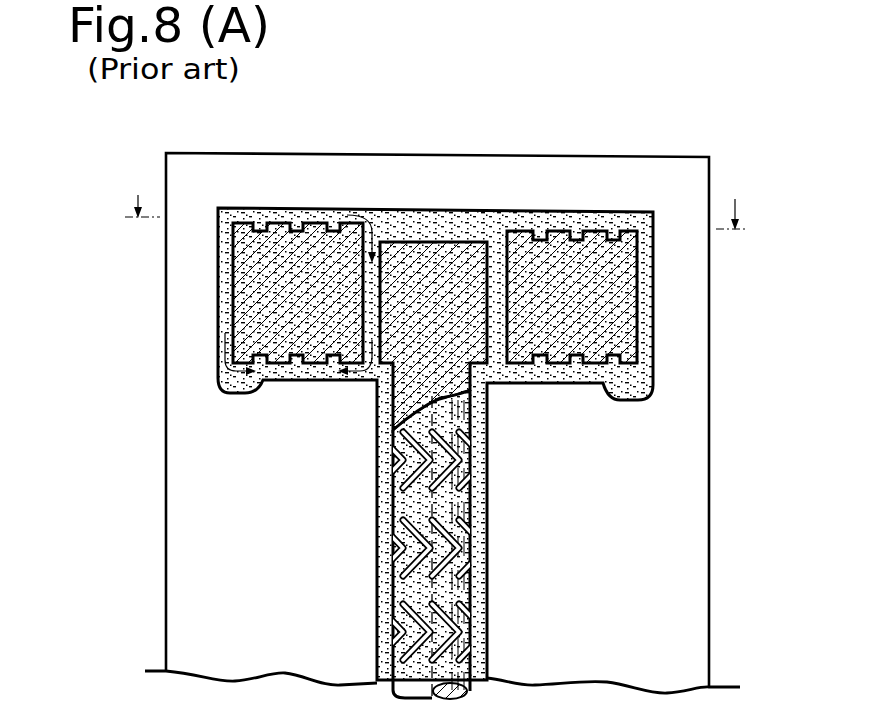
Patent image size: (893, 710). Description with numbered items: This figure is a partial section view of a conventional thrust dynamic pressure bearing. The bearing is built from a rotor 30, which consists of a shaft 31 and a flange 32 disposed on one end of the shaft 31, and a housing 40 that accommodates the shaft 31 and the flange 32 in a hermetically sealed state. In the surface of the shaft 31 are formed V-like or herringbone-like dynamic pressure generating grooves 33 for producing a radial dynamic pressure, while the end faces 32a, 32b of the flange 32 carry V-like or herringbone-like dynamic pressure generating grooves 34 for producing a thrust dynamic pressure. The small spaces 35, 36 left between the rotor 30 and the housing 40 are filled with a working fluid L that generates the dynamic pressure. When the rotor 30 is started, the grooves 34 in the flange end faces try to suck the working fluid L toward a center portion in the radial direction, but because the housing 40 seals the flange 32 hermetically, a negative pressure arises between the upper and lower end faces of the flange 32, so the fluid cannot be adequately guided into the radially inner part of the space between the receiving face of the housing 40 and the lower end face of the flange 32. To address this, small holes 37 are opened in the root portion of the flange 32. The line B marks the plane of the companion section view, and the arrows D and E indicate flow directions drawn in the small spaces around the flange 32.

The rotor 30 is at (233, 278).
The shaft 31 is at (378, 497).
The flange 32 is at (617, 303).
The end face of the flange 32a is at (598, 230).
The end face of the flange 32b is at (603, 368).
The dynamic pressure generating grooves 33 is at (481, 556).
The dynamic pressure generating grooves 34 is at (297, 226).
The small space 35 is at (645, 255).
The small space 36 is at (562, 224).
The small holes 37 is at (488, 350).
The housing 40 is at (673, 565).
The line B— B is at (437, 192).
The flow direction D is at (222, 357).
The flow direction E is at (358, 380).
The working fluid L is at (575, 372).